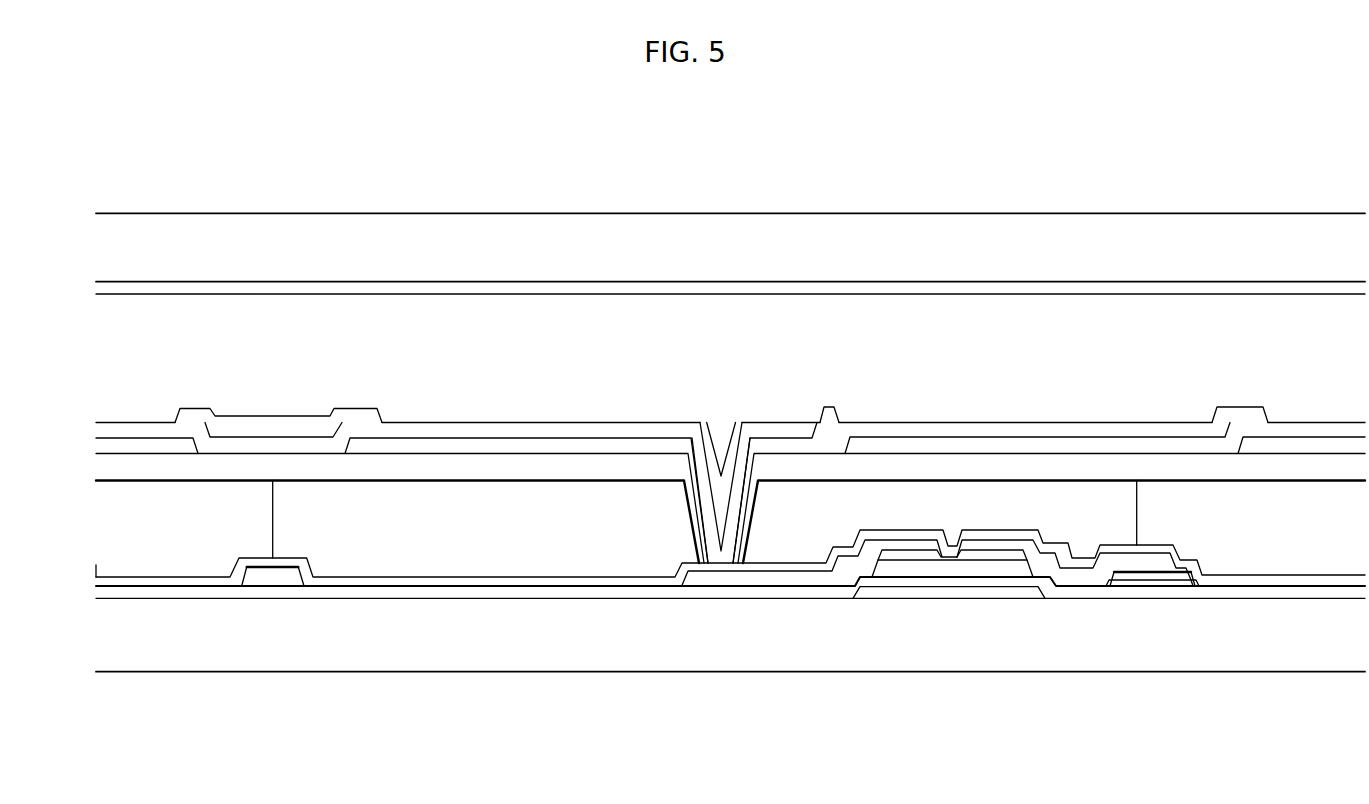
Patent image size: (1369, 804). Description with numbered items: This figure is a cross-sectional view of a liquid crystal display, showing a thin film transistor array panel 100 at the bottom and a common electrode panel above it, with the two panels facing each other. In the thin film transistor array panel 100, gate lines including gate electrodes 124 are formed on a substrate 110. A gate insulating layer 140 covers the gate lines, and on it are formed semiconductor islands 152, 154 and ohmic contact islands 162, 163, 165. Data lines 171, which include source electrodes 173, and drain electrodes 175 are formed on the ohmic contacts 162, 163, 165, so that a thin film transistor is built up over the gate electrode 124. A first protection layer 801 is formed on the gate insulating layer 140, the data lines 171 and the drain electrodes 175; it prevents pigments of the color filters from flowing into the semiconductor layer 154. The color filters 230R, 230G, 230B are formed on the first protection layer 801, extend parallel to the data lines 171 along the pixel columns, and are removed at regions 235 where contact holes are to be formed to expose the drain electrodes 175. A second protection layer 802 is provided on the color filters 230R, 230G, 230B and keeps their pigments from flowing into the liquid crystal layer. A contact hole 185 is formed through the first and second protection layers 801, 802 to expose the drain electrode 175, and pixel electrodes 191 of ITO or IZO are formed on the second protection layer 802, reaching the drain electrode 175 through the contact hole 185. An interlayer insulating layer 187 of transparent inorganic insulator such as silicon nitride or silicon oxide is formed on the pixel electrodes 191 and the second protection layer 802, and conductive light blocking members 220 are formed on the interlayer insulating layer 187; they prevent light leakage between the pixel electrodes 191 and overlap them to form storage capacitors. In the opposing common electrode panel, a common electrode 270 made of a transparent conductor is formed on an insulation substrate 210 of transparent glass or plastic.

The thin film transistor array panel 100 is at (80, 482).
The substrate 110 is at (510, 655).
The gate electrode 124 is at (965, 592).
The gate insulating layer 140 is at (628, 592).
The semiconductor island 152 is at (1163, 592).
The semiconductor island 154 is at (1000, 545).
The ohmic contact island 162 is at (1183, 578).
The ohmic contact island 163 is at (1030, 555).
The ohmic contact island 165 is at (890, 552).
The data line 171 is at (278, 578).
The source electrode 173 is at (1025, 550).
The drain electrode 175 is at (920, 542).
The contact hole 185 is at (694, 482).
The interlayer insulating layer 187 is at (305, 445).
The pixel electrode 191 is at (132, 445).
The insulation substrate 210 is at (642, 232).
The light blocking member 220 is at (243, 420).
The red color filter 230R is at (170, 555).
The green color filter 230G is at (378, 555).
The blue color filter 230B is at (1332, 535).
The region where color filter is removed 235 is at (696, 522).
The common electrode 270 is at (768, 284).
The first protection layer 801 is at (447, 582).
The second protection layer 802 is at (558, 465).